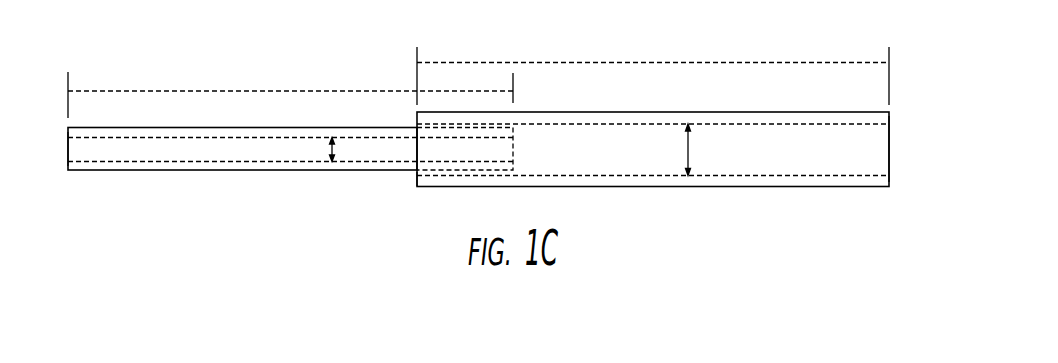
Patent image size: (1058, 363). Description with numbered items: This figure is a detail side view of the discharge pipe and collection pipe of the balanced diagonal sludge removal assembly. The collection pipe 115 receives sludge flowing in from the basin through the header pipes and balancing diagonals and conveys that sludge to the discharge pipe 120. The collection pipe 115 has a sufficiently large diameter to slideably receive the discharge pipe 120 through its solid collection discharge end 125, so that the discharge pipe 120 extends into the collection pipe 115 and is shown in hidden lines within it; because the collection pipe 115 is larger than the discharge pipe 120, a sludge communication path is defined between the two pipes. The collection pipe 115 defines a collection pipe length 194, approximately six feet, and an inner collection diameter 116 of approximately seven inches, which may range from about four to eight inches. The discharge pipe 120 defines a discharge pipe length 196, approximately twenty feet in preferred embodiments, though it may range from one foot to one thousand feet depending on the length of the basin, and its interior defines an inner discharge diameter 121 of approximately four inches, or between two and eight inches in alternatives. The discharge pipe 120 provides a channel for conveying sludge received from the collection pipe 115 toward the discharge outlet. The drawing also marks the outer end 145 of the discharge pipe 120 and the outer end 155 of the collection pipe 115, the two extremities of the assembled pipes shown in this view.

The collection pipe 115 is at (628, 112).
The inner collection diameter 116 is at (688, 147).
The discharge pipe 120 is at (198, 127).
The inner discharge diameter 121 is at (332, 143).
The solid collection discharge end 125 is at (417, 187).
The first end 145 is at (68, 148).
The second end 155 is at (889, 143).
The collection pipe length 194 is at (667, 62).
The discharge pipe length 196 is at (257, 91).